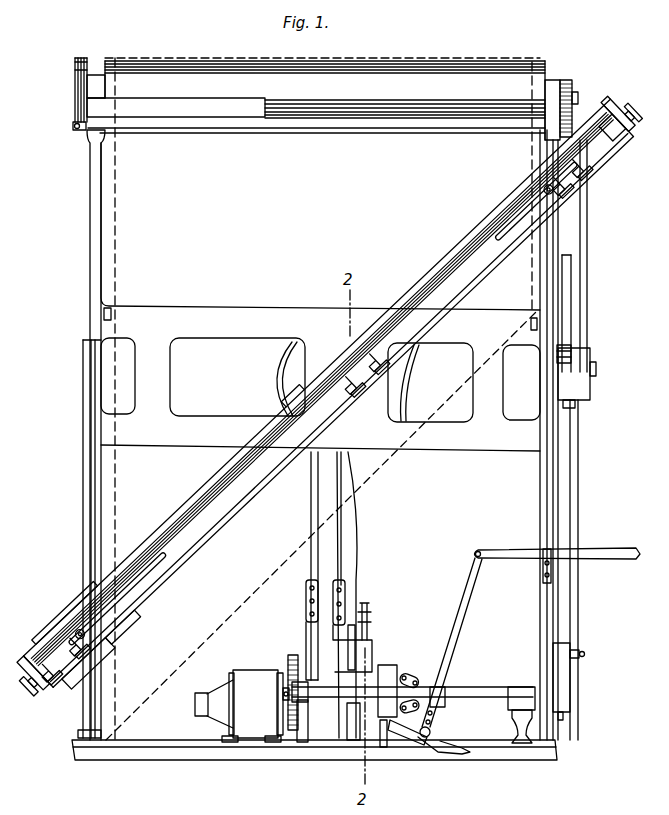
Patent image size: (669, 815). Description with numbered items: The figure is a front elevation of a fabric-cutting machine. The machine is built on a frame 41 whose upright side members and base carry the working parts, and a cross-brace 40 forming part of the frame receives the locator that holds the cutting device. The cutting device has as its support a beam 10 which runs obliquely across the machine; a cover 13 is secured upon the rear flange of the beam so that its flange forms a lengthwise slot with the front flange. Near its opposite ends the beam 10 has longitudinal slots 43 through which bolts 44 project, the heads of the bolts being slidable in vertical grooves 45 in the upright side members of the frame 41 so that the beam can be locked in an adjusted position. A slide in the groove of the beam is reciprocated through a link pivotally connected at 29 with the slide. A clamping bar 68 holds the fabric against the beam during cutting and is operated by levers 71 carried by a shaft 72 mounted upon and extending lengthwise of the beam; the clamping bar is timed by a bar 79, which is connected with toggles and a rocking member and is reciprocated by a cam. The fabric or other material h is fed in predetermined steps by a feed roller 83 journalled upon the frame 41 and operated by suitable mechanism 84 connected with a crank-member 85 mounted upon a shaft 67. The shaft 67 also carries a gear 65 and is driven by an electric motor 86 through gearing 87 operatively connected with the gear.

The support 10 is at (246, 508).
The cover 13 is at (216, 486).
The pivot 29 is at (284, 378).
The cross-brace 40 is at (173, 440).
The frame 41 is at (89, 283).
The longitudinal slots 43 is at (133, 605).
The bolts 44 is at (88, 642).
The vertical grooves 45 is at (93, 541).
The gear 65 is at (291, 662).
The shaft 67 is at (485, 697).
The clamping bar 68 is at (437, 270).
The levers 71 is at (36, 690).
The shaft 72 is at (210, 534).
The bar 79 is at (358, 537).
The feed roller 83 is at (385, 76).
The mechanism 84 is at (576, 345).
The crank-member 85 is at (570, 678).
The electric motor 86 is at (246, 683).
The gearing 87 is at (292, 732).
The fabric or other material h is at (117, 236).